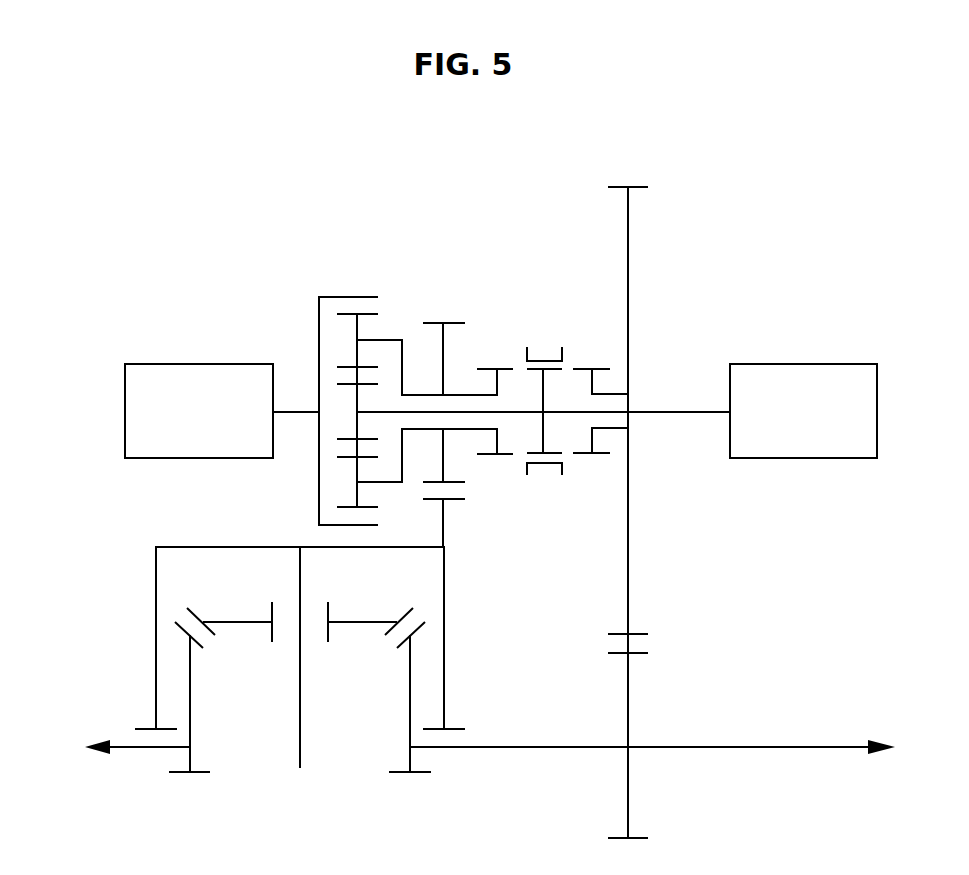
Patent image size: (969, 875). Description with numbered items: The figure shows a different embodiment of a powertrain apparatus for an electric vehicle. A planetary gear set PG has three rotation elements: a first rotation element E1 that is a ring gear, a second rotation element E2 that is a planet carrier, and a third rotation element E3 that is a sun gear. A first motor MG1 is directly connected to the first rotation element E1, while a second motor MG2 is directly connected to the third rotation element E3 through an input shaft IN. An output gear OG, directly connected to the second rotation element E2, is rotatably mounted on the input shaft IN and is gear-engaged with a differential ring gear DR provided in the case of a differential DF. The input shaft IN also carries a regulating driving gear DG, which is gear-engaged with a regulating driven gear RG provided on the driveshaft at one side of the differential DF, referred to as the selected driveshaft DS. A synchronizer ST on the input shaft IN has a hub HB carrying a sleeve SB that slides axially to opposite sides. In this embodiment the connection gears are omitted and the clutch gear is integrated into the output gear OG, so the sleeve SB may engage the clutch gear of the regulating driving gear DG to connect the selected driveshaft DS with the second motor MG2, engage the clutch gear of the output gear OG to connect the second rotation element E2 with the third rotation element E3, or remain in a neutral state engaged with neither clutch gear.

The first motor MG1 is at (199, 411).
The second motor MG2 is at (803, 411).
The planetary gear set PG is at (293, 212).
The first rotation element E1 is at (355, 296).
The second rotation element E2 is at (357, 340).
The third rotation element E3 is at (340, 383).
The input shaft IN is at (682, 412).
The output gear OG is at (432, 322).
The differential ring gear DR is at (458, 500).
The synchronizer ST is at (537, 330).
The hub HB is at (547, 366).
The sleeve SB is at (540, 464).
The regulating driving gear DG is at (642, 633).
The regulating driven gear RG is at (615, 838).
The differential DF is at (148, 589).
The selected driveshaft DS is at (763, 748).